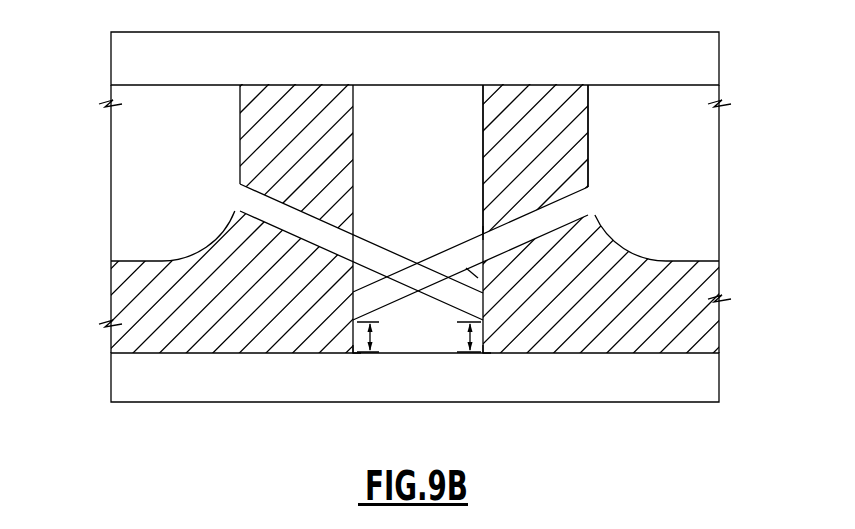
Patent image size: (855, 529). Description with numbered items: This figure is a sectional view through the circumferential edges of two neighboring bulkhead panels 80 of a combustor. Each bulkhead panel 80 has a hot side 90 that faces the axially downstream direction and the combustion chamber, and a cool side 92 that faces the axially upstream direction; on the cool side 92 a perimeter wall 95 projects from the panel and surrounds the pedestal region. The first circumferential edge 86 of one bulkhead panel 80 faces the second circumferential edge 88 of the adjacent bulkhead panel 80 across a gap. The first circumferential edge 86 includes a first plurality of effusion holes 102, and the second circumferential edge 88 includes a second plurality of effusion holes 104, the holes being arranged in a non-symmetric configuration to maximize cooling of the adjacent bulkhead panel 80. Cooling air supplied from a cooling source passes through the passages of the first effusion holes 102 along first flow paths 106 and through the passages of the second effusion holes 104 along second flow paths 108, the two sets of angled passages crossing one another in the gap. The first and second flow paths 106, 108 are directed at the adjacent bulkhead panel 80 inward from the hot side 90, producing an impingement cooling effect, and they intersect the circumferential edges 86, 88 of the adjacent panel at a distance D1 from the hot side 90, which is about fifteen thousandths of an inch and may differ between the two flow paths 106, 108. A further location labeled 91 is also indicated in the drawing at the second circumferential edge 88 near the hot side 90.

The bulkhead panel 80 is at (84, 357).
The first circumferential edge 86 is at (483, 118).
The second circumferential edge 88 is at (353, 342).
The hot side 90 is at (227, 354).
The second corner region 91 is at (484, 351).
The cool side 92 is at (98, 72).
The perimeter wall 95 is at (277, 85).
The first plurality of effusion holes 102 is at (483, 233).
The second plurality of effusion holes 104 is at (356, 235).
The first flow paths 106 is at (472, 273).
The second flow paths 108 is at (363, 258).
The distance D1 is at (372, 325).